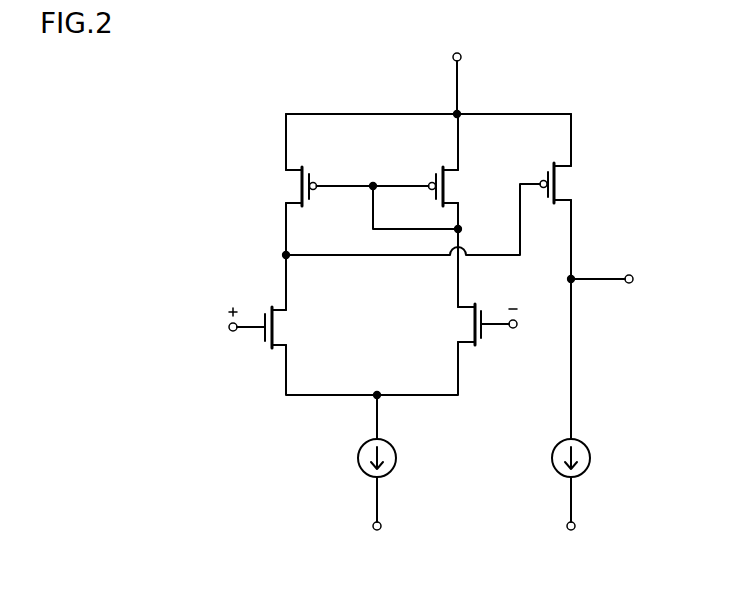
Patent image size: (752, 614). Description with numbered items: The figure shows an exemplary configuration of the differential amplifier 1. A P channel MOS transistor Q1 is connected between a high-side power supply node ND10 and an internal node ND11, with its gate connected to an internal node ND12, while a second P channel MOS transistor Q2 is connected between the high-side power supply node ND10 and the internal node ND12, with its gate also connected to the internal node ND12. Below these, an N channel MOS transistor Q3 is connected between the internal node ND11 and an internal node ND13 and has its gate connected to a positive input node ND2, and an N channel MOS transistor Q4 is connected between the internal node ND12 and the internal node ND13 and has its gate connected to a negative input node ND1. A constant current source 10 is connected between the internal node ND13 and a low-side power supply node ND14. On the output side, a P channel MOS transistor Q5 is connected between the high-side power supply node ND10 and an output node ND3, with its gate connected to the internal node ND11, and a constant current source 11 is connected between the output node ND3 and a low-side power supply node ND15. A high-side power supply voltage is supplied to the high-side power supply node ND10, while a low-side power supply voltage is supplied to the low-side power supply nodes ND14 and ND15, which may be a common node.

The differential amplifier 1 is at (241, 499).
The P channel MOS transistor Q1 is at (309, 174).
The P channel MOS transistor Q2 is at (436, 174).
The N channel MOS transistor Q3 is at (265, 314).
The N channel MOS transistor Q4 is at (481, 311).
The P channel MOS transistor Q5 is at (548, 172).
The constant current source 10 is at (396, 458).
The constant current source 11 is at (590, 458).
The negative input node ND1 is at (513, 328).
The positive input node ND2 is at (234, 331).
The output node ND3 is at (630, 275).
The high-side power supply node ND10 is at (461, 57).
The internal node ND11 is at (288, 258).
The internal node ND12 is at (456, 231).
The internal node ND13 is at (377, 391).
The low-side power supply node ND14 is at (378, 530).
The low-side power supply node ND15 is at (572, 530).